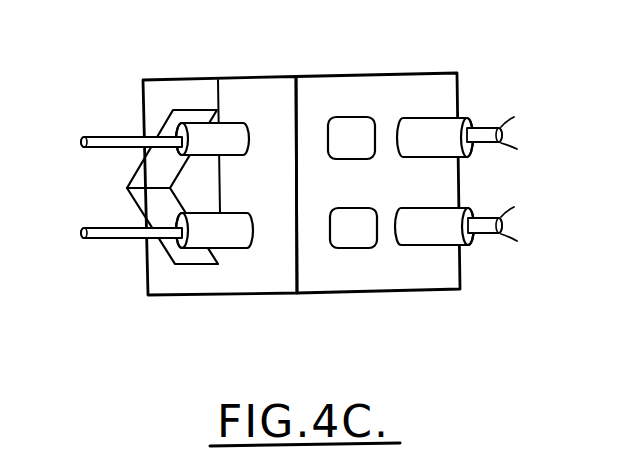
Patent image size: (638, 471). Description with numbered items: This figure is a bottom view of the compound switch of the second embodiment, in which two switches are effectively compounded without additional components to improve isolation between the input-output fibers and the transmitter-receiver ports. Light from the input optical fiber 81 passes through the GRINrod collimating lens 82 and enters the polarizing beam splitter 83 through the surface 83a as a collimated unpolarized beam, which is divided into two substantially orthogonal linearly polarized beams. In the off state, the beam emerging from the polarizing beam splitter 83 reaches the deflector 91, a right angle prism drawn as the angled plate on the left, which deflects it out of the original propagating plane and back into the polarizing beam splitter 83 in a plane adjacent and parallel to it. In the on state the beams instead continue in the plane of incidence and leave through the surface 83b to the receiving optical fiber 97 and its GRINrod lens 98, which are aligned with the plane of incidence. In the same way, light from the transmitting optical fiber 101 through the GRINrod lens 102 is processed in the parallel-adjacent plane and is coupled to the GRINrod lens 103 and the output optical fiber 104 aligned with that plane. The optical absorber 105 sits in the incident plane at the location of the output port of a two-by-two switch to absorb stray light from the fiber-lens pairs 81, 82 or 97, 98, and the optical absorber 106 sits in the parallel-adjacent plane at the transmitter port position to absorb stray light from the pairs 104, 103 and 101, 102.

The input optical fiber 81 is at (102, 143).
The GRINrod collimating lens 82 is at (230, 130).
The polarizing beam splitter 83 is at (301, 149).
The surface 83a is at (200, 78).
The surface 83b is at (400, 83).
The deflector 91 is at (178, 117).
The receiving optical fiber 97 is at (483, 128).
The GRINrod lens 98 is at (425, 127).
The transmitting optical fiber 101 is at (483, 227).
The GRINrod lens 102 is at (428, 233).
The GRINrod lens 103 is at (237, 237).
The output optical fiber 104 is at (103, 235).
The optical absorber 105 is at (340, 125).
The optical absorber 106 is at (358, 242).